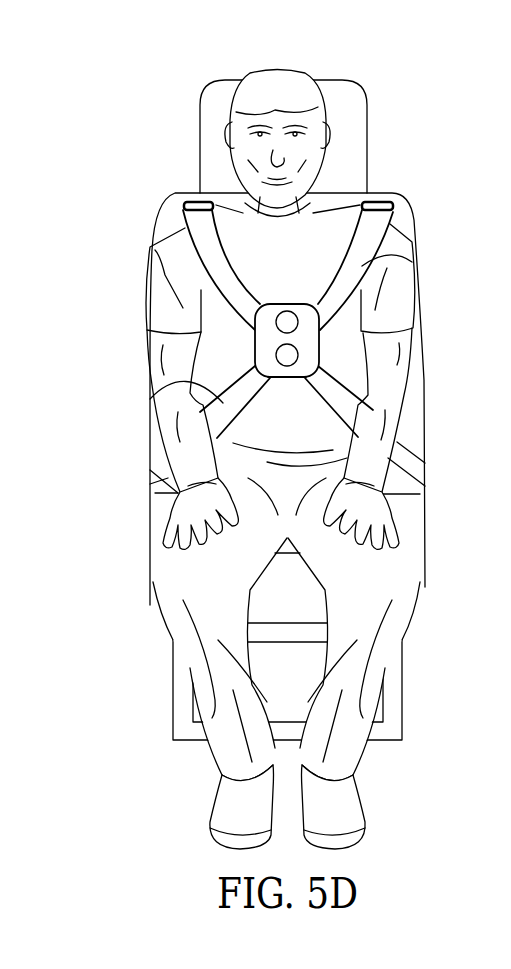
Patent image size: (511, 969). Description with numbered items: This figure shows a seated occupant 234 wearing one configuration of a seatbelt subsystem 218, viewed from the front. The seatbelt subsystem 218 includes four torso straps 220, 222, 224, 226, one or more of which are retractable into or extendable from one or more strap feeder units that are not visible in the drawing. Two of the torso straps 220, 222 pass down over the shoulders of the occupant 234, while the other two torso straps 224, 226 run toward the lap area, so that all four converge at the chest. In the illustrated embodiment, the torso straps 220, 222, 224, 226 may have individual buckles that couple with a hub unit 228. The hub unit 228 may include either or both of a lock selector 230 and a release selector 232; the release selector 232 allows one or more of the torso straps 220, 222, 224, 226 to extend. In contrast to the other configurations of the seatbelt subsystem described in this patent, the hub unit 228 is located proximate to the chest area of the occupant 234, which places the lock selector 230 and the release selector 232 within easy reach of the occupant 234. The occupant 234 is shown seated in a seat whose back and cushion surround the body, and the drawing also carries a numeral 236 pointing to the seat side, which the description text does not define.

The seatbelt subsystem 218 is at (393, 221).
The torso strap 220 is at (180, 214).
The torso strap 222 is at (414, 286).
The torso strap 224 is at (150, 399).
The torso strap 226 is at (413, 456).
The hub unit 228 is at (299, 303).
The lock selector 230 is at (284, 311).
The release selector 232 is at (287, 378).
The occupant 234 is at (302, 75).
The seat 236 is at (424, 345).